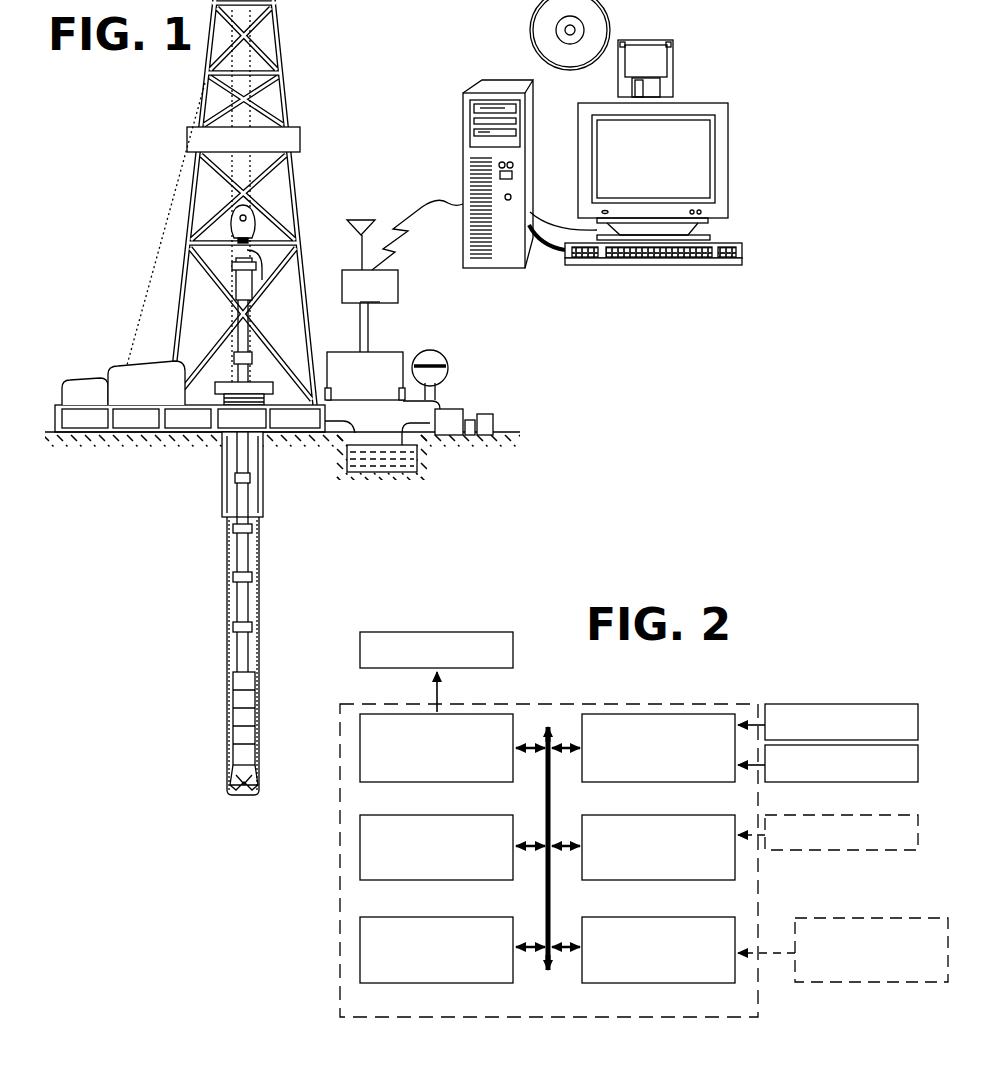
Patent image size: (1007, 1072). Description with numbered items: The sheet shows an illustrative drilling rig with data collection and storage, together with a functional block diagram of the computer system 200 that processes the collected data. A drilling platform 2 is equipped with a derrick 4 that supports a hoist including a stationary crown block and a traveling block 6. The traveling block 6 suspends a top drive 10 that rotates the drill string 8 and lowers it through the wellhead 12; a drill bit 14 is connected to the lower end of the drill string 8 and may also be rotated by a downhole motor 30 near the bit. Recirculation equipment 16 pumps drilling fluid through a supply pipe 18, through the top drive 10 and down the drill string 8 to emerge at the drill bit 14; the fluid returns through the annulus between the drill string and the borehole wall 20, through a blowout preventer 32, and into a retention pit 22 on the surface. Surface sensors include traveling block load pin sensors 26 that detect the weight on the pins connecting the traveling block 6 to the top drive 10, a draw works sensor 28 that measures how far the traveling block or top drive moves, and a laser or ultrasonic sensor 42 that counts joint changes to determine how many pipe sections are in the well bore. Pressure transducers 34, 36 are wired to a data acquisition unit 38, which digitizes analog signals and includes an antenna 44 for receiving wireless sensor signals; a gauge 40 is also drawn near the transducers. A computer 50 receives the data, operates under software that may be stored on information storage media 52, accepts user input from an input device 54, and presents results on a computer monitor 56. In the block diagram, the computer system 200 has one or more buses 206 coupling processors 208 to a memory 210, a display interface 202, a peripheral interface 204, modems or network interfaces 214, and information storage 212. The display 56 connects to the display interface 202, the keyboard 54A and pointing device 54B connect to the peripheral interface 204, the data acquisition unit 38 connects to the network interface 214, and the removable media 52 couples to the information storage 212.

In FIG. 1, the drilling platform 2 is at (57, 412).
In FIG. 1, the derrick 4 is at (272, 103).
In FIG. 1, the traveling block 6 is at (255, 217).
In FIG. 1, the drill string 8 is at (246, 563).
In FIG. 1, the top drive 10 is at (250, 282).
In FIG. 1, the wellhead 12 is at (215, 385).
In FIG. 1, the drill bit 14 is at (248, 781).
In FIG. 1, the recirculation equipment 16 is at (447, 412).
In FIG. 1, the supply pipe 18 is at (414, 402).
In FIG. 1, the borehole wall 20 is at (260, 566).
In FIG. 1, the retention pit 22 is at (360, 465).
In FIG. 1, the traveling block load pin sensors 26 is at (262, 235).
In FIG. 1, the draw works sensor 28 is at (80, 387).
In FIG. 1, the downhole motor 30 is at (250, 748).
In FIG. 1, the blowout preventer 32 is at (233, 447).
In FIG. 1, the pressure transducer 34 is at (364, 376).
In FIG. 1, the pressure transducer 36 is at (400, 392).
In FIG. 1, the data acquisition unit 38 is at (402, 276).
In FIG. 2, the data acquisition unit 38 is at (808, 850).
In FIG. 1, the pressure gauge 40 is at (425, 352).
In FIG. 1, the laser or ultrasonic sensor 42 is at (228, 382).
In FIG. 1, the antenna 44 is at (366, 216).
In FIG. 1, the computer 50 is at (533, 192).
In FIG. 2, the computer 50 is at (380, 1017).
In FIG. 1, the information storage media 52 is at (630, 38).
In FIG. 2, the information storage media 52 is at (840, 983).
In FIG. 1, the input device 54 is at (716, 264).
In FIG. 2, the keyboard 54A is at (813, 782).
In FIG. 2, the pointing device 54B is at (813, 704).
In FIG. 1, the computer monitor 56 is at (712, 217).
In FIG. 2, the computer monitor 56 is at (397, 670).
In FIG. 2, the computer system 200 is at (846, 666).
In FIG. 2, the display interface 202 is at (400, 782).
In FIG. 2, the peripheral interface 204 is at (620, 782).
In FIG. 2, the bus 206 is at (545, 882).
In FIG. 2, the processor 208 is at (400, 880).
In FIG. 2, the memory 210 is at (400, 983).
In FIG. 2, the information storage 212 is at (625, 983).
In FIG. 2, the modem or network interface 214 is at (630, 880).